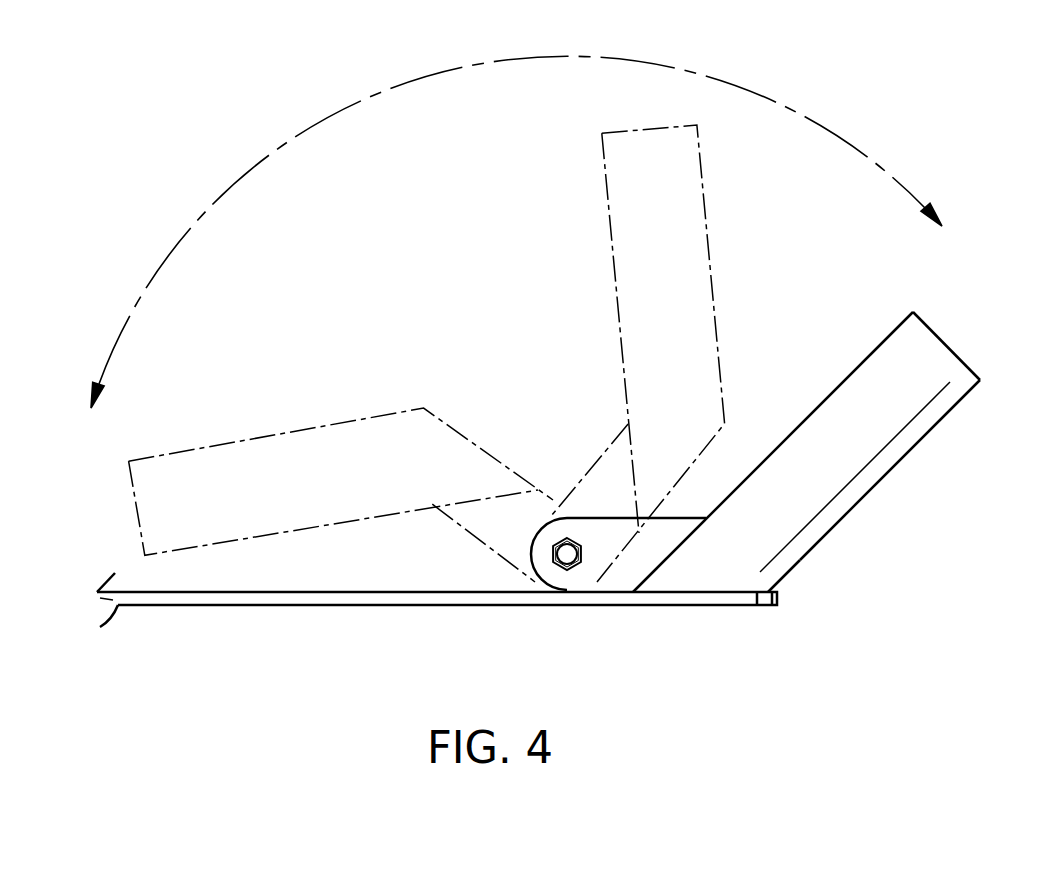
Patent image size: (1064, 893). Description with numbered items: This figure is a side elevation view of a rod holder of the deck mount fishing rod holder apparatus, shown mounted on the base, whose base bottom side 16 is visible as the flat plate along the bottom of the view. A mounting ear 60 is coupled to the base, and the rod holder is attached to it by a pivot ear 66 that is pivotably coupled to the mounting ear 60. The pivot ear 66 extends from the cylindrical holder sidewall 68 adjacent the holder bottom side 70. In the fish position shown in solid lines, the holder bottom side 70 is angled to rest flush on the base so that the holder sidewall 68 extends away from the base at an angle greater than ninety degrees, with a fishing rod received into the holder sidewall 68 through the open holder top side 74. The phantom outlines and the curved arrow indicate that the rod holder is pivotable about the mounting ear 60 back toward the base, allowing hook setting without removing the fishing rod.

The base bottom side 16 is at (170, 606).
The mounting ear 60 is at (533, 583).
The pivot ear 66 is at (622, 566).
The cylindrical holder sidewall 68 is at (902, 430).
The holder bottom side 70 is at (720, 592).
The open holder top side 74 is at (952, 346).